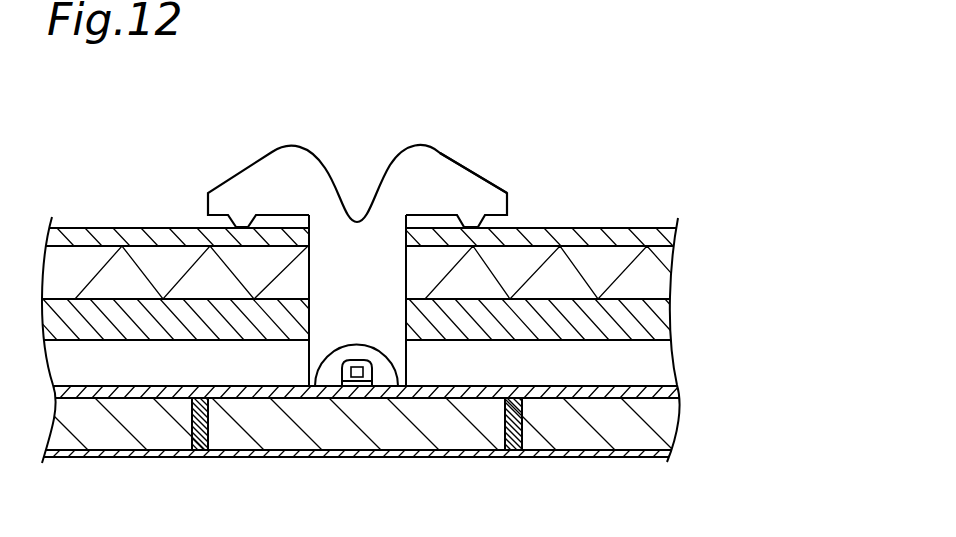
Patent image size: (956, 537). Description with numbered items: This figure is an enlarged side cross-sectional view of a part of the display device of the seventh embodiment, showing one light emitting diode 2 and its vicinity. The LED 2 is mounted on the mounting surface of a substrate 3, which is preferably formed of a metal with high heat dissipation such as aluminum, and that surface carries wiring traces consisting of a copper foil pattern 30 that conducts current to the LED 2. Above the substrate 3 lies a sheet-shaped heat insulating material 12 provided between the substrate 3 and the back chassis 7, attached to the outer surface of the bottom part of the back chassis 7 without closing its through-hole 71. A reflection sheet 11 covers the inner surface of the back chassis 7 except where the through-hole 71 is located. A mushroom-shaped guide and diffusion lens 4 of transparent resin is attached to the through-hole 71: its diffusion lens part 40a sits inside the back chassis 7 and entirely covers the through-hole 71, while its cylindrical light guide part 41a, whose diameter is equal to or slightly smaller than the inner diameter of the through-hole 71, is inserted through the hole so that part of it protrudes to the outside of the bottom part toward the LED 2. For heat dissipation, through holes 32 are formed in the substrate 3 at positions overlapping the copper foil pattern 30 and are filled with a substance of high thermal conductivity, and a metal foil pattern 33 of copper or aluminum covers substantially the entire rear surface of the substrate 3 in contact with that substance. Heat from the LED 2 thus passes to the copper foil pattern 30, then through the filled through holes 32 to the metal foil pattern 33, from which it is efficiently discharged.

The light emitting diode 2 is at (373, 373).
The substrate 3 is at (457, 443).
The guide and diffusion lens 4 is at (402, 88).
The back chassis 7 is at (653, 278).
The reflection sheet 11 is at (560, 235).
The heat insulating material 12 is at (663, 333).
The copper foil pattern 30 is at (677, 392).
The through hole 32 is at (200, 451).
The metal foil pattern 33 is at (622, 455).
The diffusion lens part 40a is at (468, 162).
The light guide part 41a is at (323, 333).
The through-hole 71 is at (310, 272).